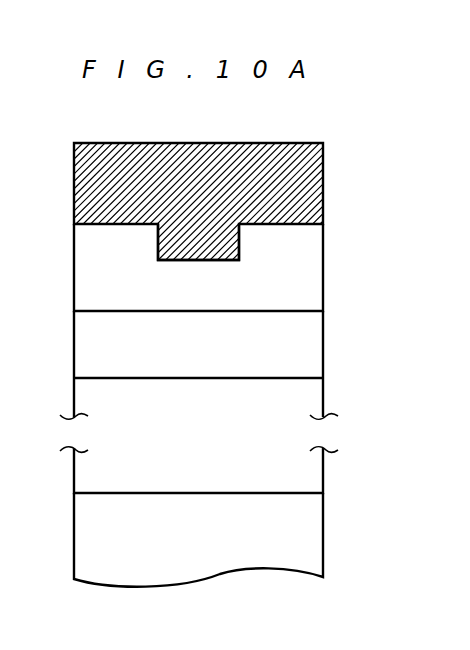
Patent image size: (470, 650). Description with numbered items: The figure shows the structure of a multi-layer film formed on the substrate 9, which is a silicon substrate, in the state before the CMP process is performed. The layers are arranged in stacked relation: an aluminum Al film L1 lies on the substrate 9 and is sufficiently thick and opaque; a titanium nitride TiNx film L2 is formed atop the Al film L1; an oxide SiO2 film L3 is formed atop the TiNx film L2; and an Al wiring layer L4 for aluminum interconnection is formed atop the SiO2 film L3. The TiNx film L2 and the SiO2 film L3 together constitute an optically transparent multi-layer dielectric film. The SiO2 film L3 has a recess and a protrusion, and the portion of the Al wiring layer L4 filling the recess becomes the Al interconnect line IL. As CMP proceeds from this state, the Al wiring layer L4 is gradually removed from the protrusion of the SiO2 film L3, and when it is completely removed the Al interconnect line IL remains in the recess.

The Al wiring layer L4 is at (323, 179).
The Al interconnect line IL is at (239, 243).
The SiO2 film L3 is at (323, 270).
The TiNx film L2 is at (323, 348).
The Al film L1 is at (323, 473).
The substrate 9 is at (323, 535).